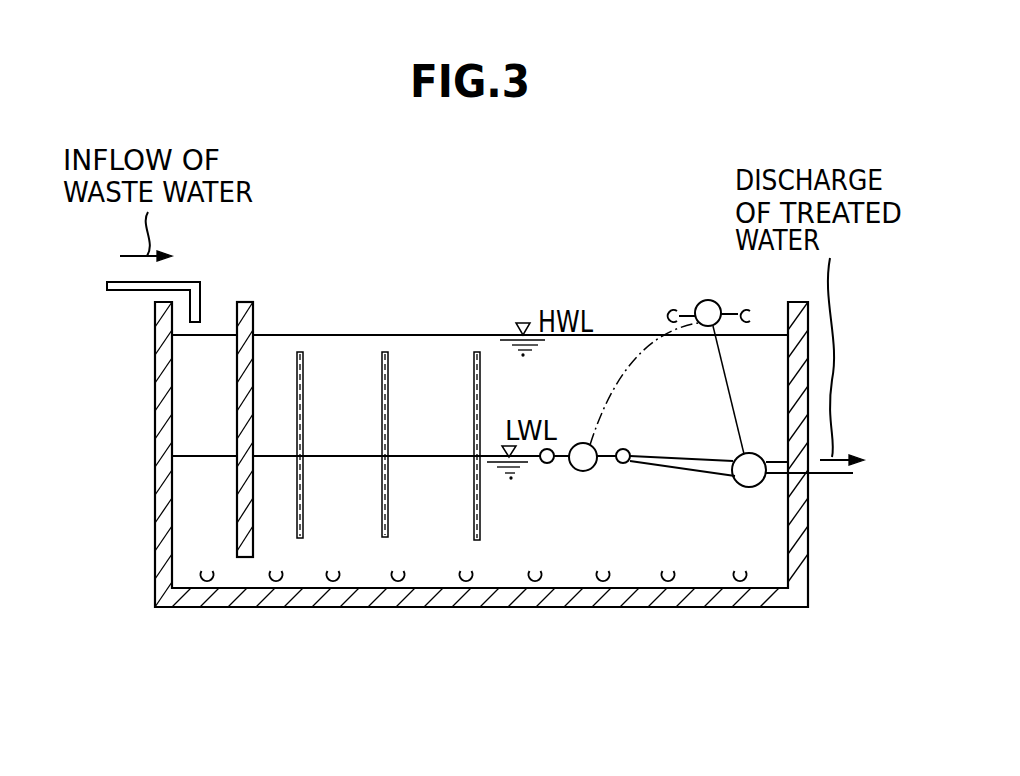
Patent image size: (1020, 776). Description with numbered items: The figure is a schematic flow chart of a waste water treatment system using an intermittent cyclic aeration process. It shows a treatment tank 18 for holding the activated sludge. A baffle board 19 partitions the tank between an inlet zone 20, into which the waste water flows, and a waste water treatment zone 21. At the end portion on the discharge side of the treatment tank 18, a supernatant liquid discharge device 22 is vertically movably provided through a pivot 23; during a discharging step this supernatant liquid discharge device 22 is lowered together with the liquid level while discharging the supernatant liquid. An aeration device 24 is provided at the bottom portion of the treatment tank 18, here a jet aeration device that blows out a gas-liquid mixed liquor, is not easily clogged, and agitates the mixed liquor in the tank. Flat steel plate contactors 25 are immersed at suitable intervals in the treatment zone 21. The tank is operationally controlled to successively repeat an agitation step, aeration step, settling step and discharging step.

The treatment tank 18 is at (155, 385).
The baffle board 19 is at (253, 312).
The inlet zone 20 is at (188, 406).
The waste water treatment zone 21 is at (403, 343).
The supernatant liquid discharge device 22 is at (592, 447).
The pivot 23 is at (741, 491).
The aeration device 24 is at (660, 568).
The flat steel plate contactors 25 is at (477, 500).